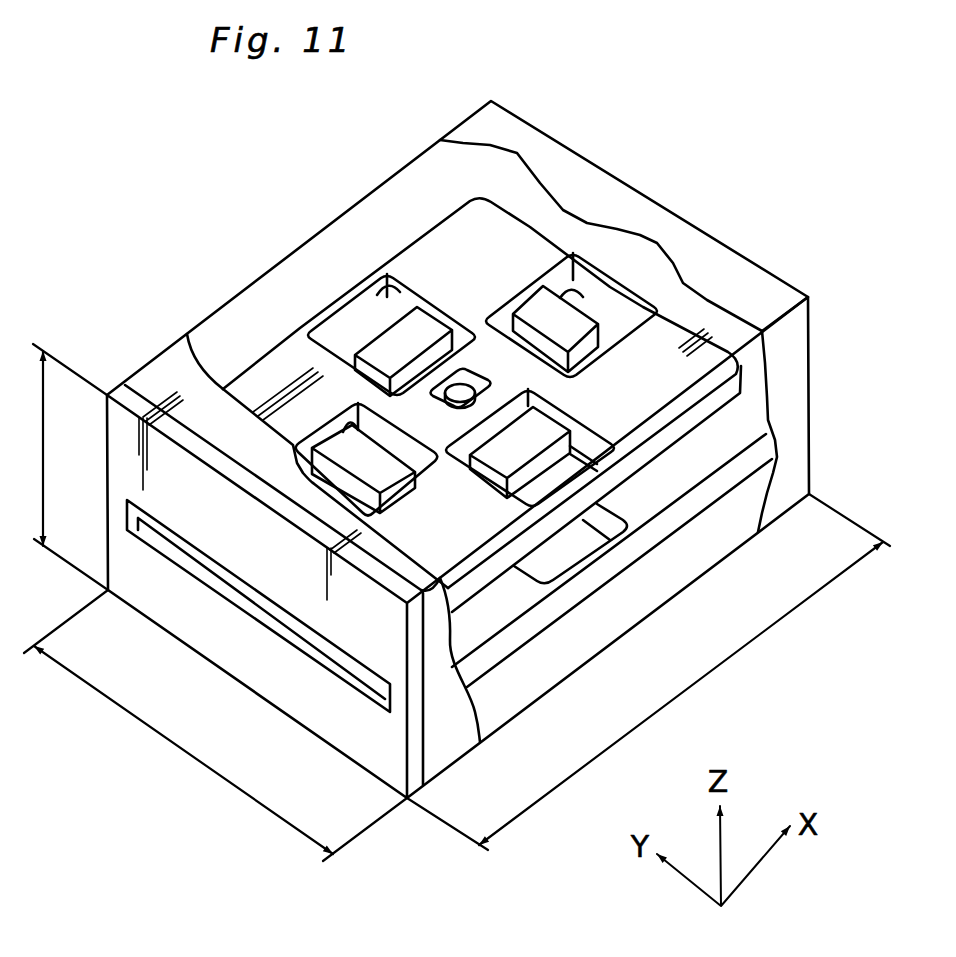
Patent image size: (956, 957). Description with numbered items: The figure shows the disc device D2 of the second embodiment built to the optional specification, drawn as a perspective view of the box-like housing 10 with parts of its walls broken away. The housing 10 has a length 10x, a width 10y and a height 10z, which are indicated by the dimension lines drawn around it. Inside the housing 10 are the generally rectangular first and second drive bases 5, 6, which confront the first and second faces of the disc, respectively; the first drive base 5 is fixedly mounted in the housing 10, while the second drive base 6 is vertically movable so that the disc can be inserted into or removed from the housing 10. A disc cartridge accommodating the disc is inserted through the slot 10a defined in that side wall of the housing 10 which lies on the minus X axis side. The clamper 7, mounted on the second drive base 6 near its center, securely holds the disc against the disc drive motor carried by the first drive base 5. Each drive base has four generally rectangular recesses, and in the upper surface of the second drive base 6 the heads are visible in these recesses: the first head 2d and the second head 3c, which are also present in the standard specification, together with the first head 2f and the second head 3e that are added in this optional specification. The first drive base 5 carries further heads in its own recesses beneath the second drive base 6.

The disc device D2 is at (495, 96).
The housing 10 is at (198, 632).
The slot 10a is at (280, 634).
The length of the housing 10x is at (648, 672).
The width of the housing 10y is at (215, 725).
The height of the housing 10z is at (57, 467).
The first head 2d is at (360, 453).
The first head 2f is at (555, 322).
The second head 3c is at (540, 472).
The second head 3e is at (392, 340).
The first drive base 5 is at (633, 547).
The second drive base 6 is at (673, 432).
The clamper 7 is at (475, 392).